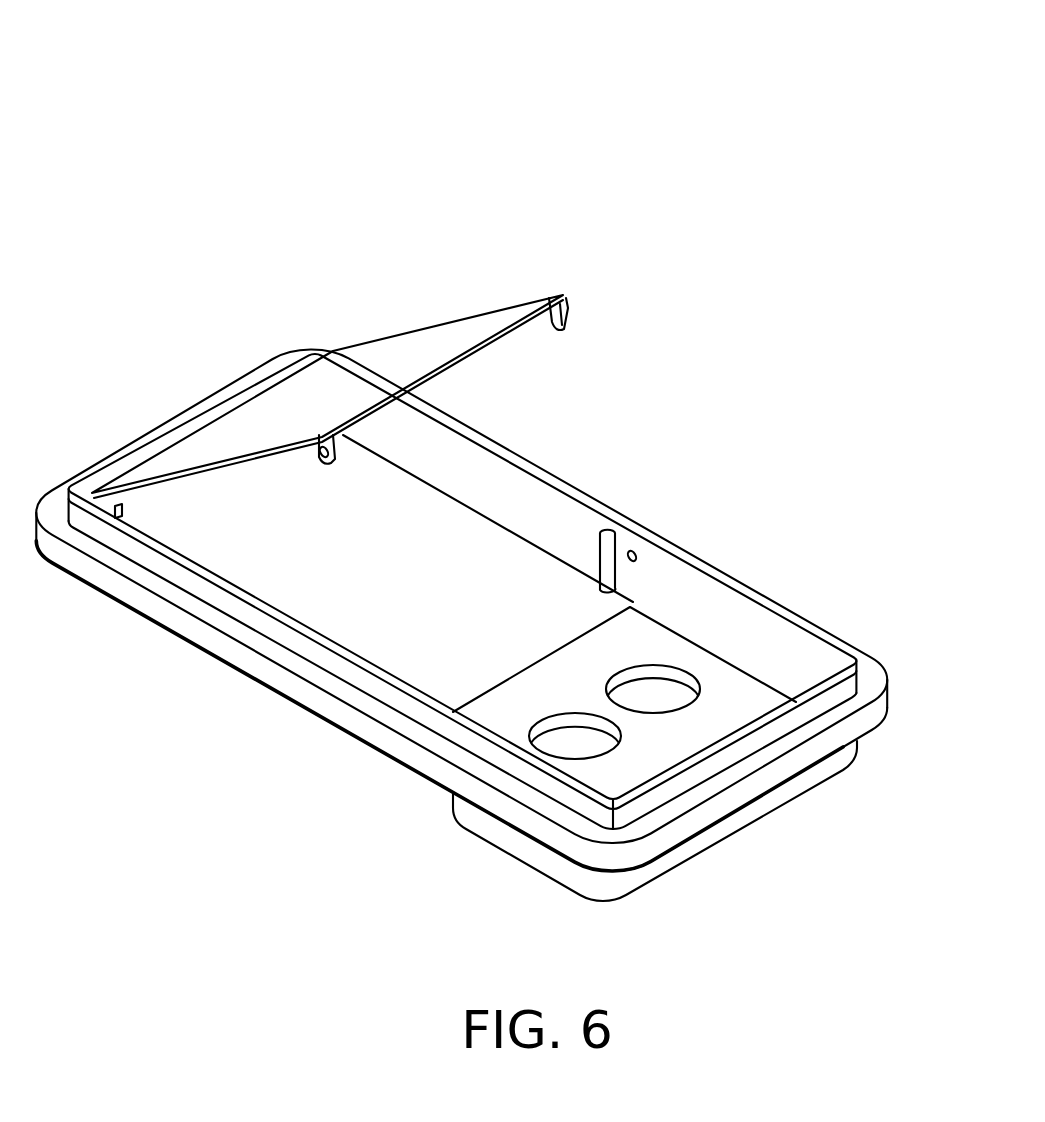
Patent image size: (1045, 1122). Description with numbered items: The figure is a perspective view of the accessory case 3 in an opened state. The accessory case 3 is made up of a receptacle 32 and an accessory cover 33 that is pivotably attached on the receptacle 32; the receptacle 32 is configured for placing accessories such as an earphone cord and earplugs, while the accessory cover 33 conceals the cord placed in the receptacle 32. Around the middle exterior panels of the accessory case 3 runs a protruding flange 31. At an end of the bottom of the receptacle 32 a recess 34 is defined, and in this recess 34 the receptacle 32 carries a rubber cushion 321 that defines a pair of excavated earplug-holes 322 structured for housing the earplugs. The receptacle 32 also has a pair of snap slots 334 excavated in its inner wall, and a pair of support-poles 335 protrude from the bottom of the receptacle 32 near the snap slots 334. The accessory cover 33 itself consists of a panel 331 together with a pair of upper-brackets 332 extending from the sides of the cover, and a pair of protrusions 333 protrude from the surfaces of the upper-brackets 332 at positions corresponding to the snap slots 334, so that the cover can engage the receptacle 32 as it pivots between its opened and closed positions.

The accessory case 3 is at (500, 53).
The protruding flange 31 is at (305, 692).
The receptacle 32 is at (500, 607).
The rubber cushion 321 is at (660, 666).
The earplug-holes 322 is at (588, 743).
The accessory cover 33 is at (381, 386).
The panel 331 is at (417, 360).
The upper-brackets 332 is at (315, 442).
The protrusions 333 is at (332, 459).
The snap slots 334 is at (638, 552).
The support-poles 335 is at (610, 527).
The recess 34 is at (620, 886).